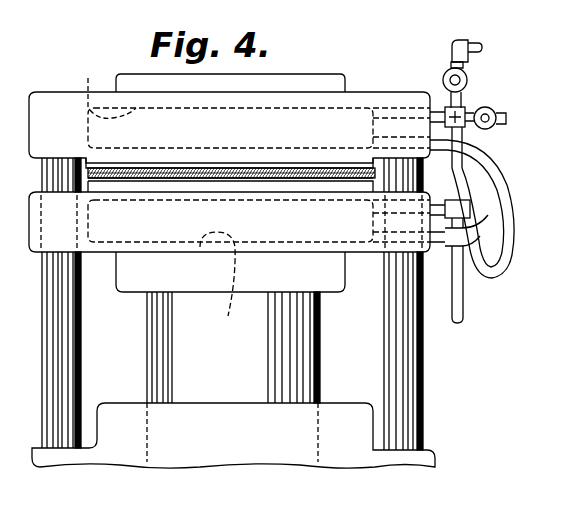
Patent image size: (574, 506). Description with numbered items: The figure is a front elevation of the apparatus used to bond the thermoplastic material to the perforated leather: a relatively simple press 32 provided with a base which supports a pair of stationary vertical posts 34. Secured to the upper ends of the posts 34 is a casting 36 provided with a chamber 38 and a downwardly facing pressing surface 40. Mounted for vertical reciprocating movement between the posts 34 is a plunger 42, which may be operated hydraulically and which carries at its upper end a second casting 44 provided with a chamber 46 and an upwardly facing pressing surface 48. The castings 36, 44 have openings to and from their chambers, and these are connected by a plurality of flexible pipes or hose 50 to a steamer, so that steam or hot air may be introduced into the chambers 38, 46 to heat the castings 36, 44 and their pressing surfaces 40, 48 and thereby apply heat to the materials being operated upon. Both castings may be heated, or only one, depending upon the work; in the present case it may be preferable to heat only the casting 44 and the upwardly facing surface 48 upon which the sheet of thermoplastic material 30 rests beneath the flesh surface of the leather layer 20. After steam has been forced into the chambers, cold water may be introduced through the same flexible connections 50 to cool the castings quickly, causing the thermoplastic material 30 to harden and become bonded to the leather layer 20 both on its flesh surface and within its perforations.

The leather layer 20 is at (301, 167).
The calendered sheet of thermoplastic material 30 is at (177, 178).
The press 32 is at (360, 422).
The stationary vertical posts 34 is at (60, 350).
The casting 36 is at (305, 99).
The chamber 38 is at (104, 90).
The downwardly facing pressing surface 40 is at (203, 163).
The plunger 42 is at (312, 358).
The casting 44 is at (340, 284).
The chamber 46 is at (217, 284).
The upwardly facing pressing surface 48 is at (264, 185).
The flexible pipes or hose 50 is at (486, 176).